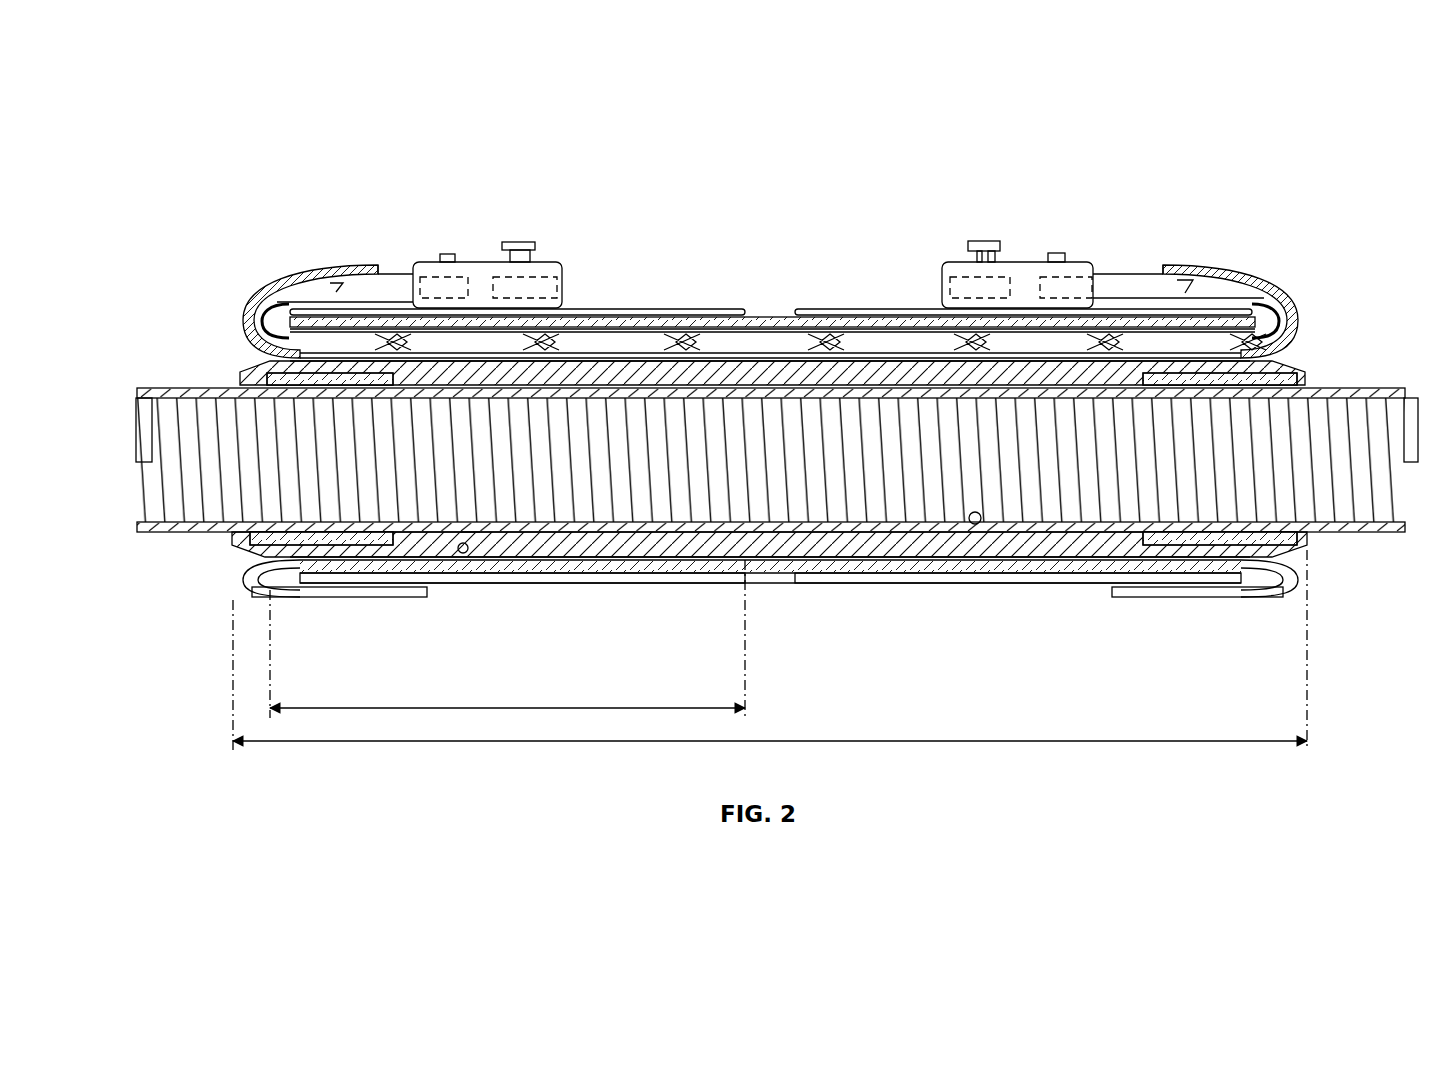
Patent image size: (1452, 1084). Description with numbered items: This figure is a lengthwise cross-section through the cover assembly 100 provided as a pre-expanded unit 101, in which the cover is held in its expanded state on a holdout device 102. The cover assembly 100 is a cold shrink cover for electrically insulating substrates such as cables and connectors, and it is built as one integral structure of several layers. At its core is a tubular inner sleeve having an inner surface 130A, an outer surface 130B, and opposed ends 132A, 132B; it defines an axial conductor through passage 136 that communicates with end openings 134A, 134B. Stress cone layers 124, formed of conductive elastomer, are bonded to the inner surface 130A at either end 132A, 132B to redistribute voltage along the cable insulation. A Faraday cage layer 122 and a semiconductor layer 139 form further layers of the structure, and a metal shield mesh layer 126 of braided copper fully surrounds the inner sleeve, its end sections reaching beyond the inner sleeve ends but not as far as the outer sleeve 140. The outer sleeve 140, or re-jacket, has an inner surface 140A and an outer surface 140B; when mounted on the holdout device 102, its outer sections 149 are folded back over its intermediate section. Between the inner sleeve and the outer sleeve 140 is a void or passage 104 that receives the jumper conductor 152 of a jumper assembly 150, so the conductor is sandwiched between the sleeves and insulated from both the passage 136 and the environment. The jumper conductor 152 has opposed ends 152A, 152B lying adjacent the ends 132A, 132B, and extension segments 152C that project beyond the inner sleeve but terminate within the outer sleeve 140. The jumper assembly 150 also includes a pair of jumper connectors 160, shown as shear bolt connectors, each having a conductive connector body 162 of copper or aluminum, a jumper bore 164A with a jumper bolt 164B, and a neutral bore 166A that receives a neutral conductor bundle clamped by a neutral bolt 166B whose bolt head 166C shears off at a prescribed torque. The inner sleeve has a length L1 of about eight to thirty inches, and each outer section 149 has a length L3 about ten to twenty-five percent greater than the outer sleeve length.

The cover assembly 100 is at (244, 100).
The pre-expanded unit 101 is at (1083, 113).
The holdout device 102 is at (220, 512).
The void or passage 104 is at (1311, 341).
The Faraday cage layer 122 is at (594, 548).
The stress cone layers 124 is at (343, 562).
The metal shield mesh layer 126 is at (765, 574).
The inner surface 130A is at (975, 525).
The outer surface 130B is at (462, 553).
The end 132A is at (233, 373).
The end 132B is at (1312, 371).
The end opening 134A is at (243, 487).
The end opening 134B is at (1334, 492).
The conductor through passage 136 is at (470, 497).
The semiconductor layer 139 is at (797, 558).
The outer sleeve 140 is at (751, 311).
The inner surface 140A is at (932, 330).
The outer surface 140B is at (778, 318).
The outer sections 149 is at (557, 582).
The jumper assembly 150 is at (553, 191).
The jumper conductor 152 is at (763, 345).
The end 152A is at (393, 280).
The end 152B is at (1110, 274).
The extension segments 152C is at (326, 290).
The jumper connectors 160 is at (525, 224).
The connector body 162 is at (467, 262).
The jumper bore 164A is at (430, 262).
The jumper bolt 164B is at (451, 254).
The neutral bore 166A is at (555, 288).
The neutral bolt 166B is at (528, 257).
The bolt head 166C is at (982, 262).
The length of the inner sleeve L1 is at (797, 741).
The length of each outer section L3 is at (522, 708).